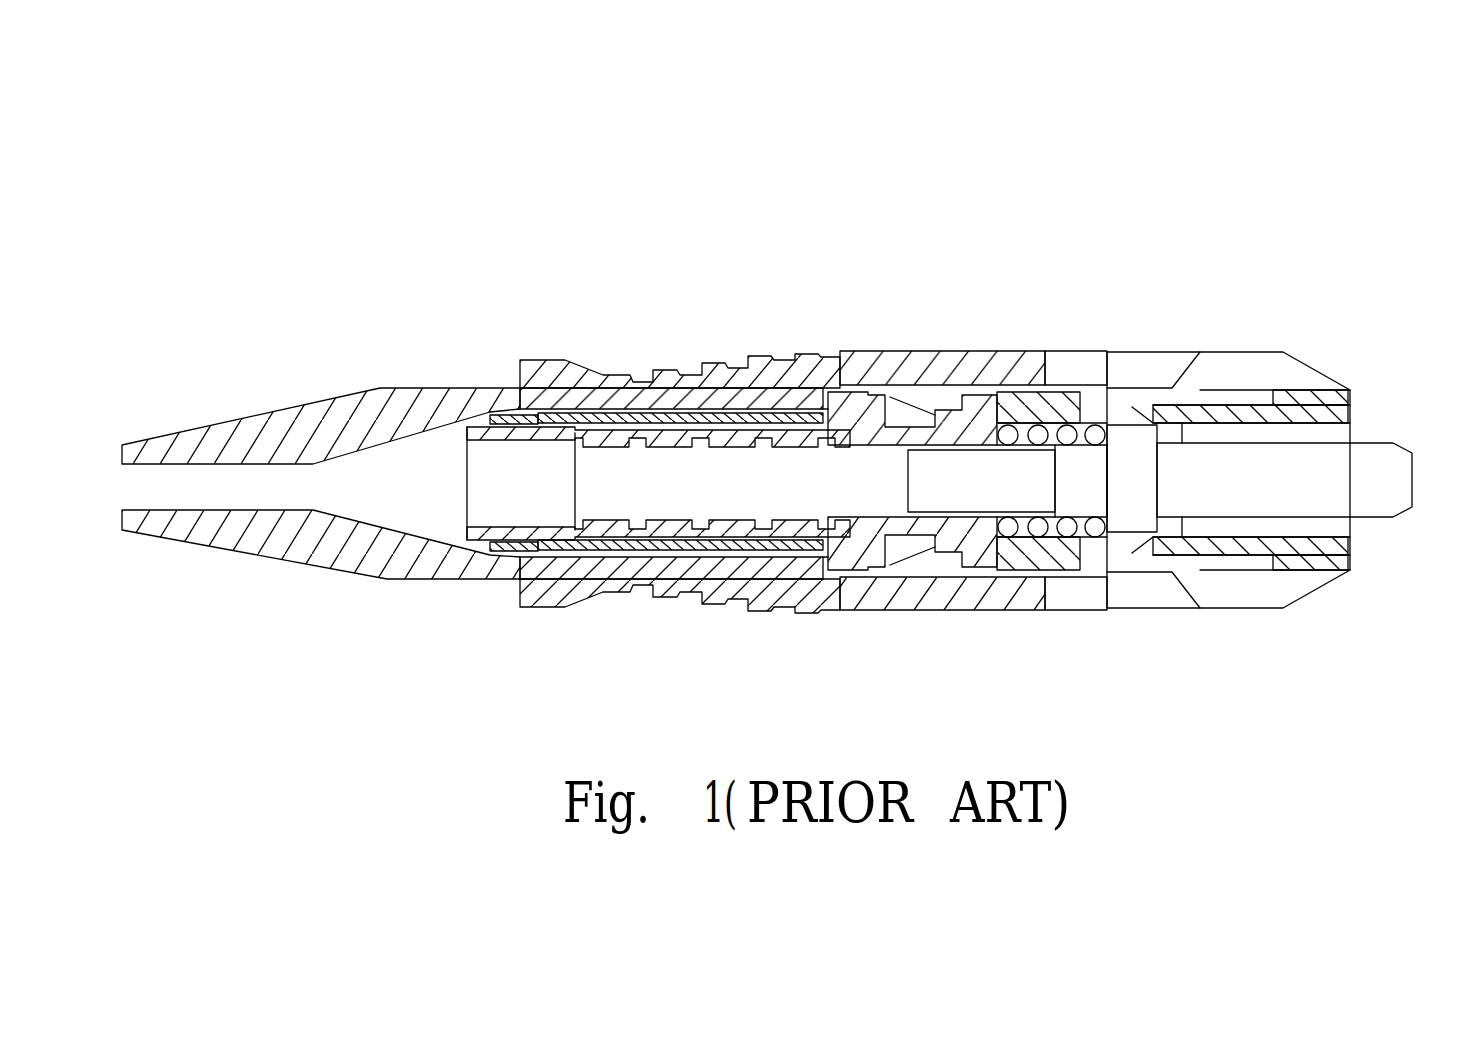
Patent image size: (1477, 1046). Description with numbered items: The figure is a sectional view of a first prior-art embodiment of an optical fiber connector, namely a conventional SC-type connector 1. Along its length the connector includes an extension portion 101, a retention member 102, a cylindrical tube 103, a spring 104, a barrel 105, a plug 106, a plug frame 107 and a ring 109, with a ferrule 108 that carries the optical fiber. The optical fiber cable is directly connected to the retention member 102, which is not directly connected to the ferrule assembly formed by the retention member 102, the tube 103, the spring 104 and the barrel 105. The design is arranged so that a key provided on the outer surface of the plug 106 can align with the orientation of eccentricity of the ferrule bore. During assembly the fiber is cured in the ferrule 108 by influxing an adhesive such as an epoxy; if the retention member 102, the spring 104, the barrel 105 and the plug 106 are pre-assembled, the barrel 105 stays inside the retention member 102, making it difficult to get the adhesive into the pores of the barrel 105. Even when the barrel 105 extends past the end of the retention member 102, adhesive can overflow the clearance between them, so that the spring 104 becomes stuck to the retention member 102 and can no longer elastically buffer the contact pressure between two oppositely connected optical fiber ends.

The coaxial connector plug (prior art) 1 is at (1360, 166).
The extension portion 101 is at (322, 437).
The retention member 102 is at (849, 430).
The cylindrical tube 103 is at (492, 415).
The spring 104 is at (1034, 426).
The barrel 105 is at (1047, 476).
The plug 106 is at (1337, 543).
The plug frame 107 is at (710, 377).
The ferrule 108 is at (1368, 452).
The ring 109 is at (497, 553).